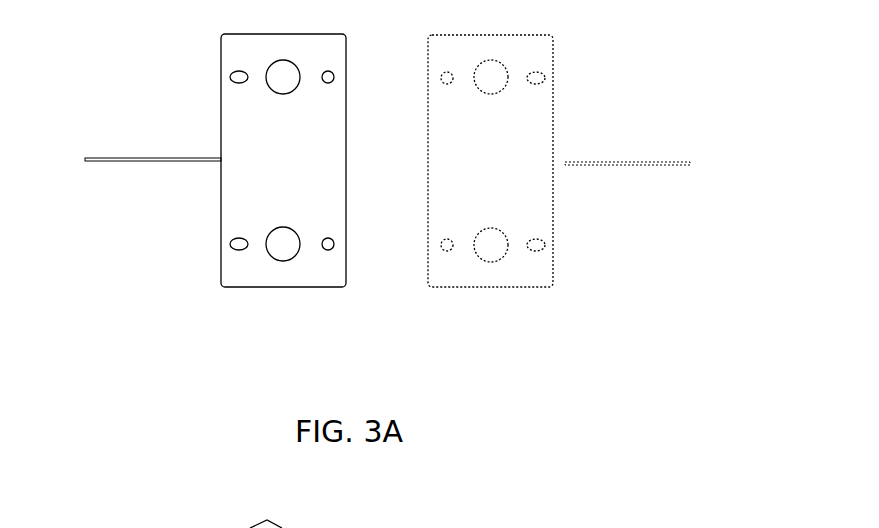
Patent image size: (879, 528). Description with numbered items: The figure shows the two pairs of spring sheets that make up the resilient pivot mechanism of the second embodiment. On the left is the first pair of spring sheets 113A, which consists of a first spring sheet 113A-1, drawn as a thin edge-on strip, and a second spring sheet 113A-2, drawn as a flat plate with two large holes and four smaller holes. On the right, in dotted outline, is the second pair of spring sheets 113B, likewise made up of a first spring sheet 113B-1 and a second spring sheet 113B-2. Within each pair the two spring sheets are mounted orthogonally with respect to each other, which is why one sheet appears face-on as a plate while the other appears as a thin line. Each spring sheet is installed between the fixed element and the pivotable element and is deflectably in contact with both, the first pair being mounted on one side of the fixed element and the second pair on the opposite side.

The first pair of spring sheets 113A is at (140, 316).
The first spring sheet 113A-1 is at (135, 169).
The second spring sheet 113A-2 is at (262, 124).
The second pair of spring sheets 113B is at (600, 311).
The first spring sheet 113B-1 is at (671, 174).
The second spring sheet 113B-2 is at (502, 122).